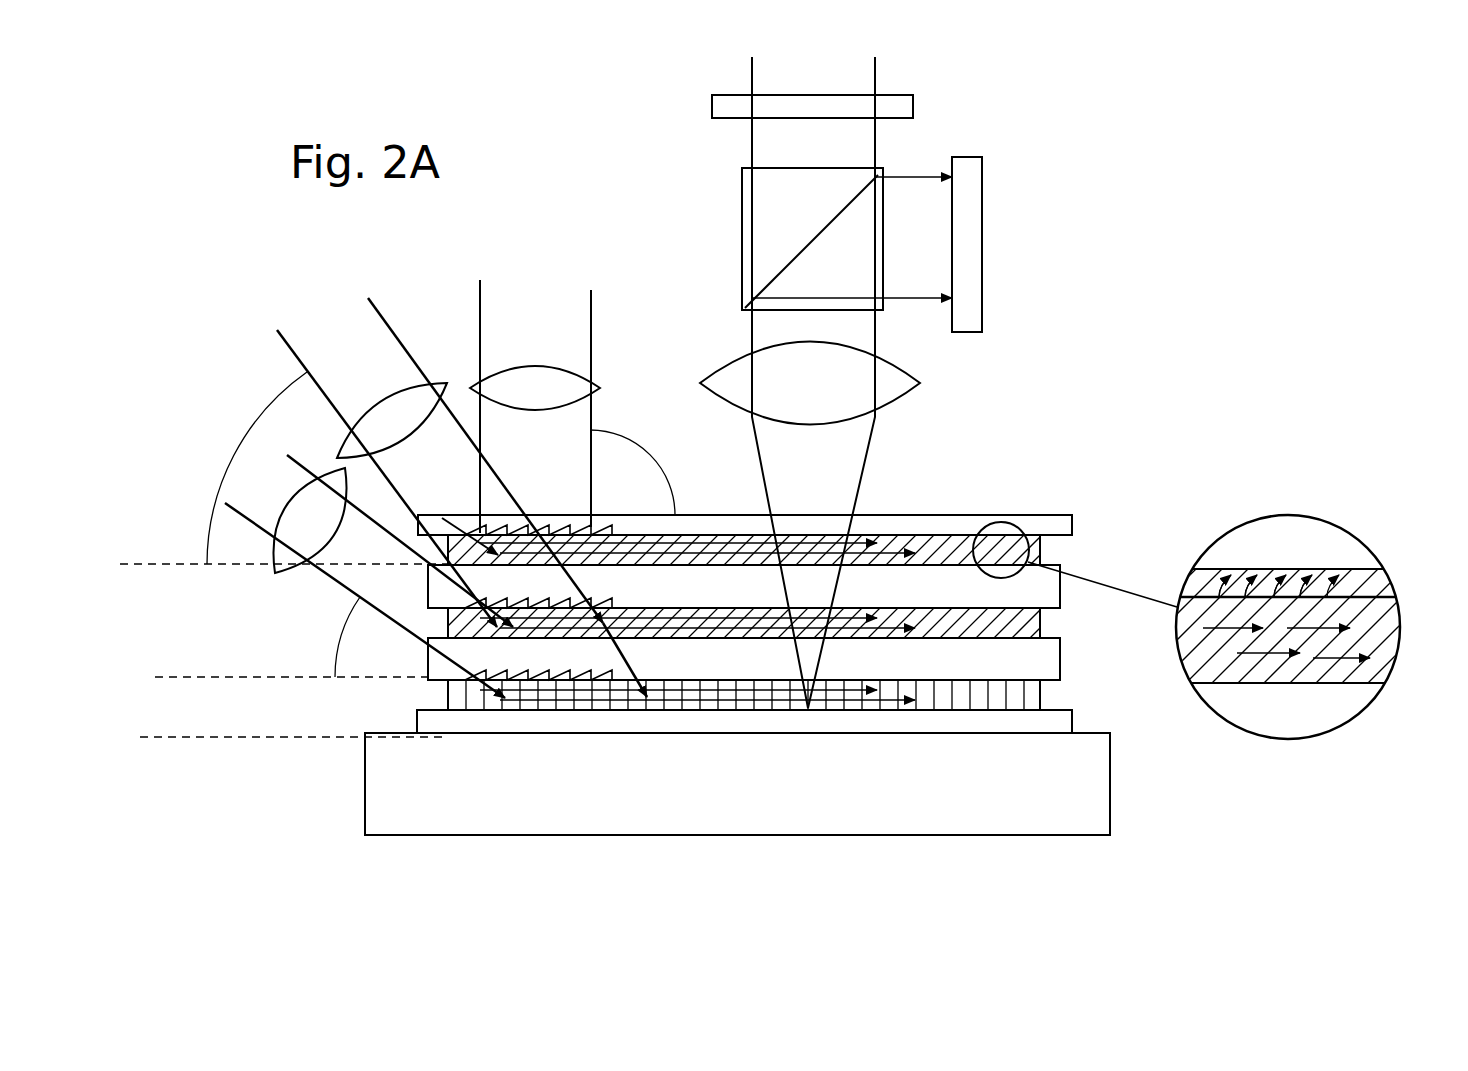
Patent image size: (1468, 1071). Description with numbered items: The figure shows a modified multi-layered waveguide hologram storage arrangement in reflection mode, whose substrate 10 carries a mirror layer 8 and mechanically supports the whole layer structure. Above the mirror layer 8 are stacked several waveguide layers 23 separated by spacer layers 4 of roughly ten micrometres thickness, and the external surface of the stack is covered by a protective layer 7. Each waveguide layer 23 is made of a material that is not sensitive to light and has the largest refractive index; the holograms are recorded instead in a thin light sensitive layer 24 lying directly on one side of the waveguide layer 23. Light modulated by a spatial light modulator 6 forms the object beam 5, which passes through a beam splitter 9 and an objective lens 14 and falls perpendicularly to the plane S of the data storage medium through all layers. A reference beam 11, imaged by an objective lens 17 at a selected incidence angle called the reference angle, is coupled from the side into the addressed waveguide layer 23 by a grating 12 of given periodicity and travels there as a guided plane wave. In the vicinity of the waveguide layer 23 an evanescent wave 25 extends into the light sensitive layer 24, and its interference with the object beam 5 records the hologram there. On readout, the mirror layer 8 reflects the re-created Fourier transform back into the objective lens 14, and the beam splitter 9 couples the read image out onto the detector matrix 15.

The spacer layer 4 is at (947, 577).
The object beam 5 is at (866, 467).
The spatial light modulator 6 is at (913, 105).
The protective layer 7 is at (1032, 516).
The mirror layer 8 is at (970, 725).
The beam splitter 9 is at (742, 185).
The substrate 10 is at (945, 812).
The reference beam 11 is at (596, 326).
The grating 12 is at (548, 520).
The objective lens 14 is at (883, 390).
The detector matrix 15 is at (975, 257).
The objective lens 17 is at (570, 385).
The waveguide layer 23 is at (1035, 628).
The light sensitive layer 24 is at (1193, 580).
The evanescent wave 25 is at (1337, 605).
The plane of the data storage medium S is at (290, 737).